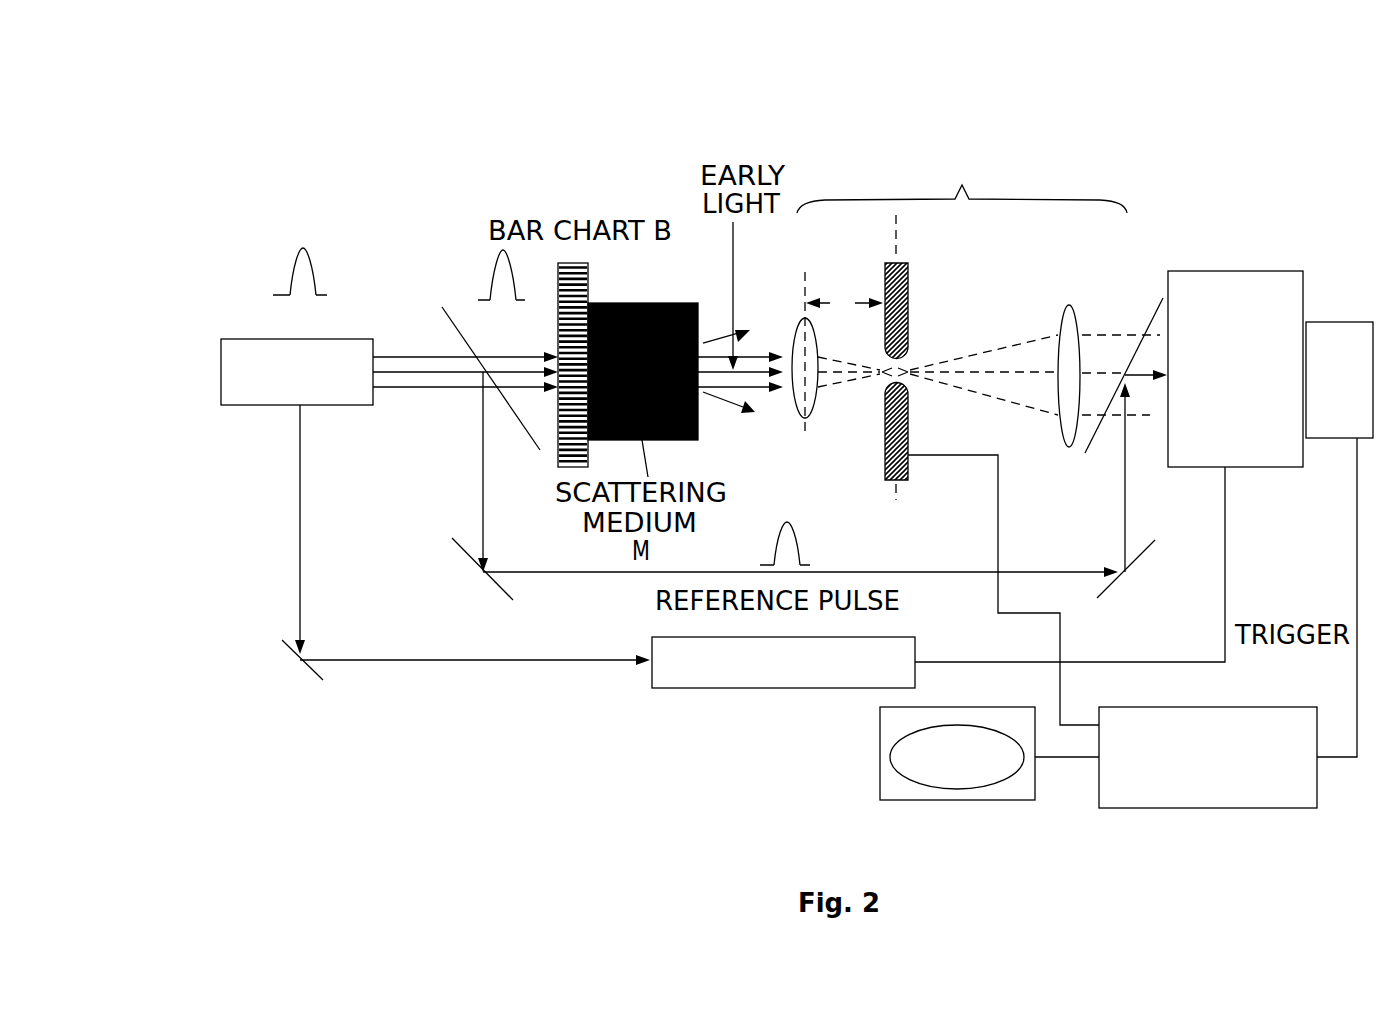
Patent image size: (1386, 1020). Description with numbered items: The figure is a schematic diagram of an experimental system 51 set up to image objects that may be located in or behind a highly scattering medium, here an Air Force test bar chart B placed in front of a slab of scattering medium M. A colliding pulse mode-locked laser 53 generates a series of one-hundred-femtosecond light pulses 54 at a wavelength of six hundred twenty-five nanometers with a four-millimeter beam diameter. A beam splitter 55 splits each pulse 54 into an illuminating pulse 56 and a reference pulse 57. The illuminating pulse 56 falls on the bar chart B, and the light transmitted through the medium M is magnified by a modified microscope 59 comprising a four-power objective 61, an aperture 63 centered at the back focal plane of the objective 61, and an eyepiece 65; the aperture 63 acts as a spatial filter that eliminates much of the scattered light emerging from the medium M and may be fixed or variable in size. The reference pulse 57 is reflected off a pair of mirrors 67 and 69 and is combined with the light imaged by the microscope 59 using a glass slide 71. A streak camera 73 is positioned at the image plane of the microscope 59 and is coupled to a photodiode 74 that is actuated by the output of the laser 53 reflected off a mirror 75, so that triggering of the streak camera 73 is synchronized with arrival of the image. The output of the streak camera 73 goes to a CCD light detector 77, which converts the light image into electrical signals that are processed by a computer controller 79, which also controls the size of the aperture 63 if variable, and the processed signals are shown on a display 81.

The system 51 is at (510, 118).
The colliding pulse mode-locked (CPM) laser 53 is at (323, 347).
The light pulses 54 is at (308, 250).
The beam splitter 55 is at (442, 310).
The illuminating pulse 56 is at (493, 268).
The reference pulse 57 is at (780, 528).
The modified microscope 59 is at (980, 180).
The objective 61 is at (806, 410).
The aperture 63 is at (903, 290).
The eyepiece 65 is at (1066, 409).
The mirror 67 is at (477, 560).
The mirror 69 is at (1130, 572).
The glass slide 71 is at (1128, 343).
The streak camera 73 is at (1235, 369).
The photodiode 74 is at (783, 662).
The mirror 75 is at (308, 672).
The CCD light detector 77 is at (1339, 380).
The computer controller 79 is at (1165, 807).
The display 81 is at (980, 795).